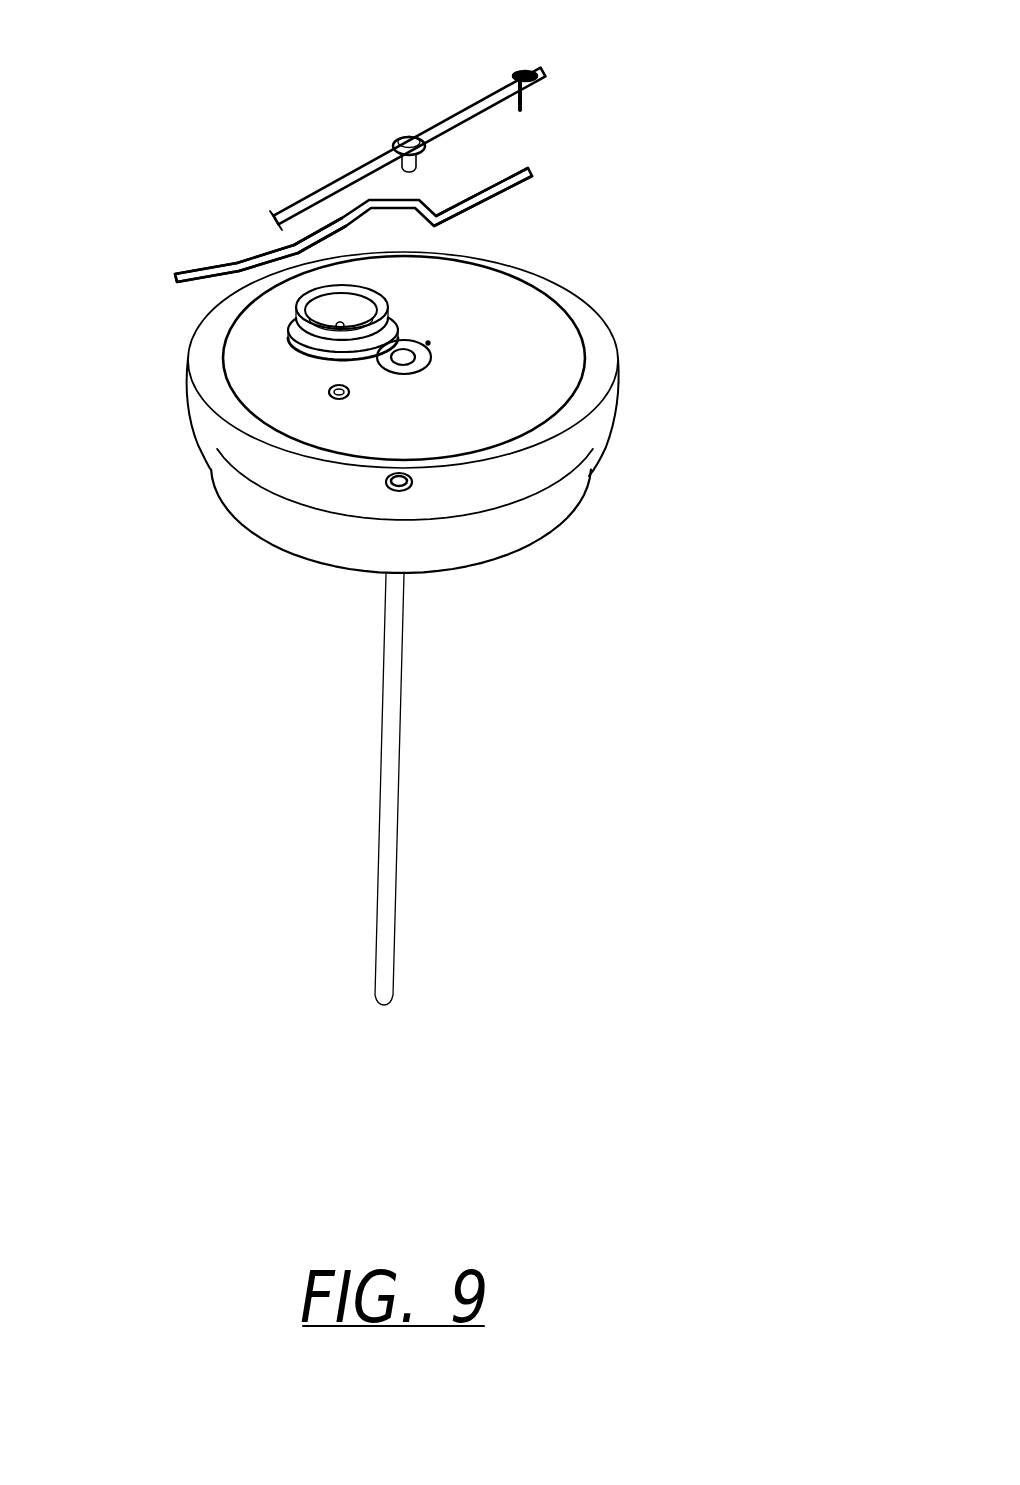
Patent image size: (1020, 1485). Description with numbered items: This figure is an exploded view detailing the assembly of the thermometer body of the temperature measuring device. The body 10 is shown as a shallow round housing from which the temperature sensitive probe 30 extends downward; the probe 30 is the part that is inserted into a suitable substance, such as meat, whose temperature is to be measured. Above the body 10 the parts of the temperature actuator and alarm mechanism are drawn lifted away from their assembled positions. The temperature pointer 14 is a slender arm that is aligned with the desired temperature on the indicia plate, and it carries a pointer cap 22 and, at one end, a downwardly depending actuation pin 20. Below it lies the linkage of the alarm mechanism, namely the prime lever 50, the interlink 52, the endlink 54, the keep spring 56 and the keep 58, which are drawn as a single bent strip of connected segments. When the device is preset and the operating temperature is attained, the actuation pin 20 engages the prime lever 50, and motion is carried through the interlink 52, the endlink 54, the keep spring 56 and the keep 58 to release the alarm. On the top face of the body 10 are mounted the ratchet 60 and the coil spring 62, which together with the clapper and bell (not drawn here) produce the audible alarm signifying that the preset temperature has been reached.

The body 10 is at (340, 548).
The temperature pointer 14 is at (514, 106).
The actuation pin 20 is at (533, 68).
The pointer cap 22 is at (397, 136).
The temperature sensitive probe 30 is at (391, 795).
The prime lever 50 is at (525, 173).
The interlink 52 is at (412, 205).
The endlink 54 is at (344, 228).
The keep spring 56 is at (282, 243).
The keep 58 is at (199, 272).
The ratchet 60 is at (303, 355).
The coil spring 62 is at (284, 317).